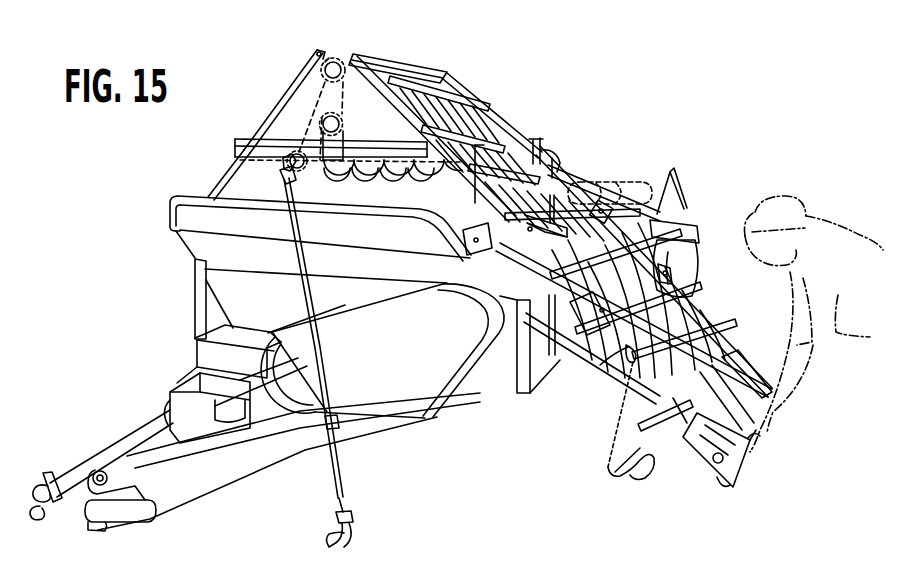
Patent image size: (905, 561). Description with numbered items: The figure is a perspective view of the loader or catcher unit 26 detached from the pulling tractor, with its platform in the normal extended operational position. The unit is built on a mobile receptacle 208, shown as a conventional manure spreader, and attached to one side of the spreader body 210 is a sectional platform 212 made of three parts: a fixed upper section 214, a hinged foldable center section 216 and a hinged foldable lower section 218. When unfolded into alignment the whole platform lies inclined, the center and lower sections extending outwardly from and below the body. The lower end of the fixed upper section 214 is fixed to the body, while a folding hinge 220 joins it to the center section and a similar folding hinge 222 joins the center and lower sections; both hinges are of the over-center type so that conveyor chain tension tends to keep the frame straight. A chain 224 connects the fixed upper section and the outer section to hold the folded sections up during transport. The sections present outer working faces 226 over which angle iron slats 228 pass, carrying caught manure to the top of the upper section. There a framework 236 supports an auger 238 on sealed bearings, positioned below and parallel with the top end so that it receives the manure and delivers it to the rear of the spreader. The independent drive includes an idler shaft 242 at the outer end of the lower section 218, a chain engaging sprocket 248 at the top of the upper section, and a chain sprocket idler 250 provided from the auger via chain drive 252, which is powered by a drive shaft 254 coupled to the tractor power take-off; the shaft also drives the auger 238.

The loader or catcher unit 26 is at (566, 140).
The mobile receptacle 208 is at (460, 422).
The spreader body 210 is at (535, 367).
The sectional platform 212 is at (568, 206).
The fixed upper section 214 is at (487, 107).
The hinged foldable center section 216 is at (670, 220).
The hinged foldable lower section 218 is at (720, 343).
The folding hinge 220 is at (613, 207).
The folding hinge 222 is at (678, 258).
The chain 224 is at (608, 478).
The outer working faces 226 is at (670, 314).
The angle iron slats 228 is at (633, 355).
The framework 236 is at (257, 150).
The auger 238 is at (412, 182).
The idler shaft 242 is at (747, 443).
The chain engaging sprocket 248 is at (342, 55).
The chain sprocket idler 250 is at (308, 107).
The chain drive 252 is at (291, 132).
The drive shaft 254 is at (333, 487).